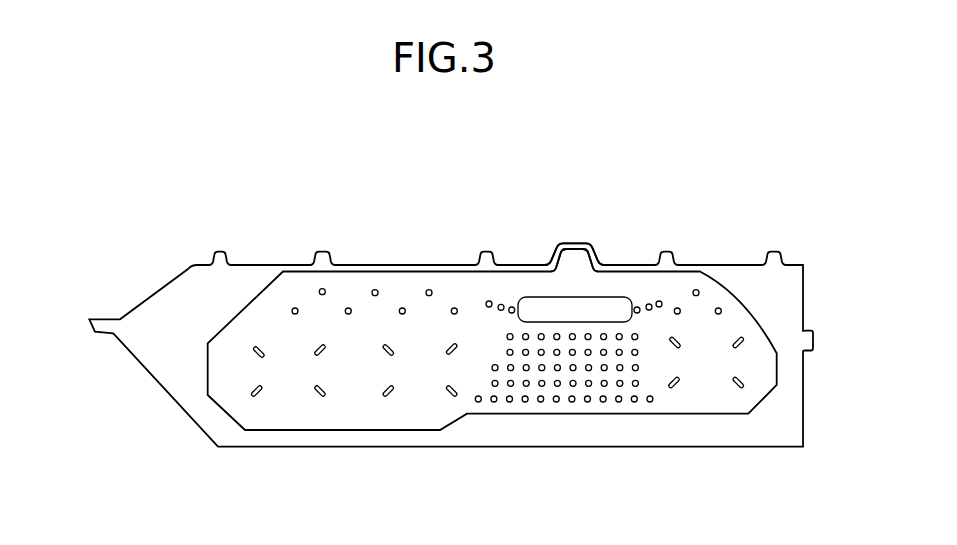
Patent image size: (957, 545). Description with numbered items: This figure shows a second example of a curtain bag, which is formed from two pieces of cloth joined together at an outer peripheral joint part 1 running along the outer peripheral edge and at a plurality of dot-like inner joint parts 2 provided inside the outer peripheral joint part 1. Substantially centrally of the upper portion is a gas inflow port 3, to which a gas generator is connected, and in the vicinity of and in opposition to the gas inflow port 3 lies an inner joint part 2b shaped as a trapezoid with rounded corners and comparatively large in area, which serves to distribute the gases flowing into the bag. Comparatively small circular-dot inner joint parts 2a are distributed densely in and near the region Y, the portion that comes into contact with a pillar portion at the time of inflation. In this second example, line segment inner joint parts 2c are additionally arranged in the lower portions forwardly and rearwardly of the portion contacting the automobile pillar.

The outer peripheral joint part 1 is at (255, 270).
The inner joint parts 2 is at (510, 175).
The inner joint part of a shape of a circular dot 2a is at (375, 293).
The inner joint part of a shape of a trapezoid with rounded corners 2b is at (537, 302).
The line segment inner joint part 2c is at (449, 347).
The gas inflow port 3 is at (577, 248).
The region in contact with a pillar portion Y is at (480, 462).